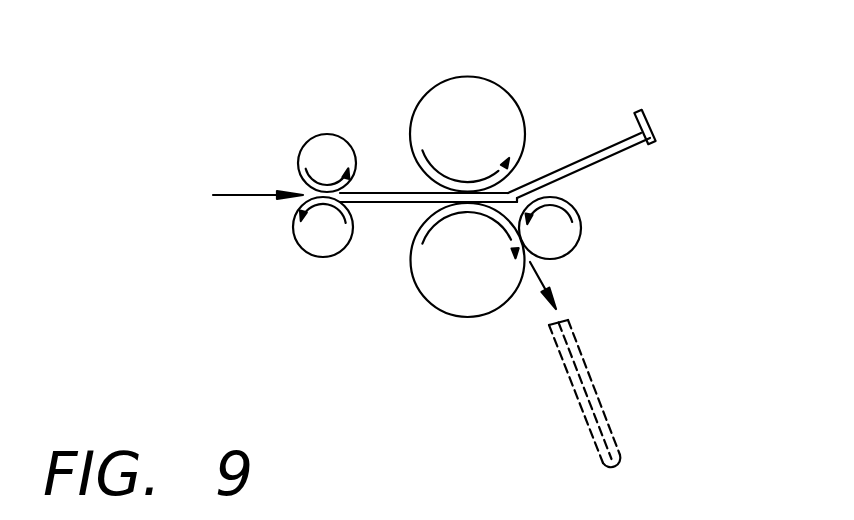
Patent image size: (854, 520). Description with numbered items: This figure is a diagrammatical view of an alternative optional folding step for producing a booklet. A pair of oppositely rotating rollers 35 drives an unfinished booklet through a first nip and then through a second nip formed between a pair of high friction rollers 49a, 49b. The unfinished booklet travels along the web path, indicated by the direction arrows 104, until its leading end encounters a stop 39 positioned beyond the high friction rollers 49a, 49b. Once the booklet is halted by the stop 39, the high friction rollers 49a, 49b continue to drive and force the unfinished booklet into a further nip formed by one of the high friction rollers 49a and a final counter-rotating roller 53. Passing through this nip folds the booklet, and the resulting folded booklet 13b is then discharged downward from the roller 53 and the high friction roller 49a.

The pair of oppositely rotating rollers 35 is at (327, 136).
The web travel direction 104 is at (252, 196).
The high friction roller 49b is at (474, 78).
The high friction roller 49a is at (475, 318).
The stop 39 is at (654, 133).
The final counter-rotating roller 53 is at (582, 218).
The folded booklet 13b is at (597, 398).